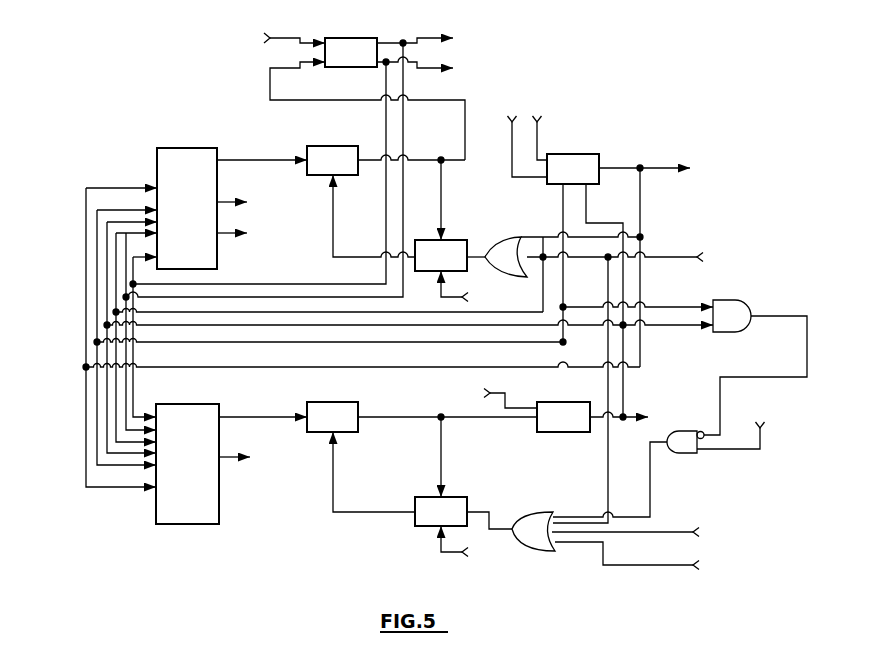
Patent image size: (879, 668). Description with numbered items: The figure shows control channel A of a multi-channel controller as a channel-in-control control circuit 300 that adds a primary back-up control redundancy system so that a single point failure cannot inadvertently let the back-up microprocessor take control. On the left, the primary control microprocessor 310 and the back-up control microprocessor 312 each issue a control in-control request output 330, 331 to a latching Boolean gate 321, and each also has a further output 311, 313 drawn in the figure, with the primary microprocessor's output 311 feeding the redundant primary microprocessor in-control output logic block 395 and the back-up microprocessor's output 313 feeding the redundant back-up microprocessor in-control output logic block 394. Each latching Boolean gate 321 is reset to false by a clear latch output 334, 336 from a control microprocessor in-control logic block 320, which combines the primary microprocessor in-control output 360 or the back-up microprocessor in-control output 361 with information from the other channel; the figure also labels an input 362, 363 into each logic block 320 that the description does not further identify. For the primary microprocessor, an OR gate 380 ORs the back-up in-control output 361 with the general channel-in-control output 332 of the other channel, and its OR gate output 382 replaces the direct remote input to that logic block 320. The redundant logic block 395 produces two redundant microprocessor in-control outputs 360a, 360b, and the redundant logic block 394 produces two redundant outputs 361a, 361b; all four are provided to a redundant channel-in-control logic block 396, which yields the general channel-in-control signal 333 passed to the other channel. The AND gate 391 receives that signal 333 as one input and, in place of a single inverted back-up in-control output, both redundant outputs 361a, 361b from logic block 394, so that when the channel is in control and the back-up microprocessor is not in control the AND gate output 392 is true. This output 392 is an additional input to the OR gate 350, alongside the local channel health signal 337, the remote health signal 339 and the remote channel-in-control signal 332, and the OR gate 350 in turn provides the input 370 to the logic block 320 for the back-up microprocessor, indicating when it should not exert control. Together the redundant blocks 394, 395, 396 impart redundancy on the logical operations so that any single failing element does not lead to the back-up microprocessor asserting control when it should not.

The control circuit 300 is at (664, 128).
The first adder A1 310 is at (203, 148).
The second adder A2 312 is at (185, 525).
The first adder sum output signal 311 is at (264, 38).
The second adder sum output signal 313 is at (484, 393).
The control in-control request output 330 is at (276, 160).
The control in-control request output 331 is at (258, 415).
The latching Boolean gate 321 is at (316, 171).
The control microprocessor in-control logic block 320 is at (424, 266).
The clear latch output 334 is at (333, 240).
The clear latch output 336 is at (332, 497).
The local channel health signal 337 is at (730, 520).
The remote health signal 339 is at (699, 565).
The general channel-in-control output of the other channel 332 is at (702, 256).
The general channel-in-control signal 333 is at (691, 167).
The OR gate 350 is at (545, 553).
The OR gate 380 is at (510, 235).
The OR gate output 382 is at (478, 252).
The control microprocessor A1 in-control output 360 is at (442, 208).
The redundant microprocessor in-control output 360a is at (540, 76).
The redundant microprocessor in-control output 360b is at (570, 103).
The control microprocessor A2 in-control output 361 is at (442, 458).
The redundant microprocessor in-control output 361a is at (650, 414).
The redundant microprocessor in-control output 361b is at (565, 345).
The enable signal 362 is at (468, 297).
The enable signal 363 is at (468, 552).
The input of the logic block for the back-up control microprocessor 370 is at (481, 510).
The AND gate 391 is at (683, 453).
The AND gate output 392 is at (650, 490).
The redundant control microprocessor A2 in-control output logic block 394 is at (546, 427).
The redundant control microprocessor A1 in-control output logic block 395 is at (334, 63).
The redundant channel-in-control logic block 396 is at (556, 179).